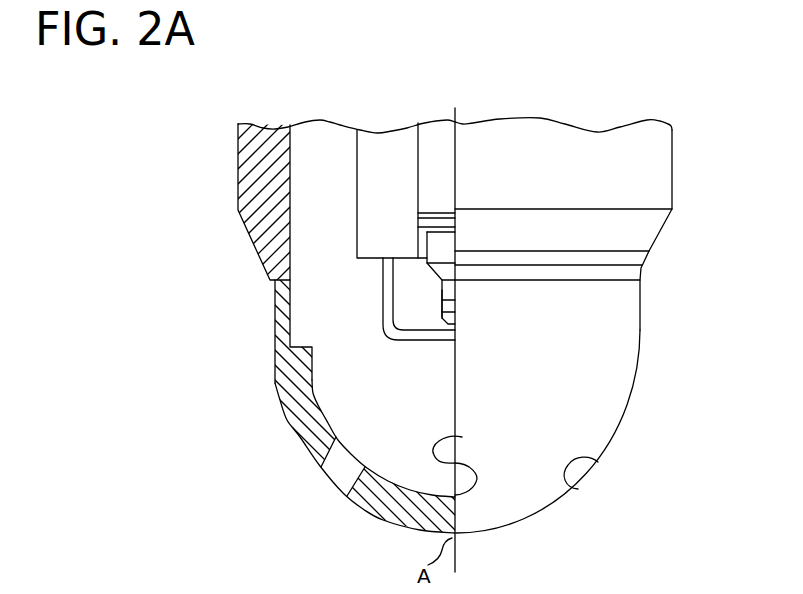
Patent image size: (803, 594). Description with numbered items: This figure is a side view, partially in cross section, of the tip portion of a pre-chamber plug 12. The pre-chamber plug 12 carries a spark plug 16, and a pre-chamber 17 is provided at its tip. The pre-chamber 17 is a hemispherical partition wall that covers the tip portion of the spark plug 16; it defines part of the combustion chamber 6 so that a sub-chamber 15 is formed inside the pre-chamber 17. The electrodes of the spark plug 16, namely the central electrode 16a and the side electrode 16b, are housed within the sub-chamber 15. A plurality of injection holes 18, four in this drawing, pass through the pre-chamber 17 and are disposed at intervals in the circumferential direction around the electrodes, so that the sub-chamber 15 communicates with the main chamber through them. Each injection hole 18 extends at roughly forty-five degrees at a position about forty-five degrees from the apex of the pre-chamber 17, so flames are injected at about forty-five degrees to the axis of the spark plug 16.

The combustion chamber 6 is at (267, 200).
The pre-chamber plug 12 is at (679, 99).
The sub-chamber 15 is at (330, 385).
The spark plug 16 is at (438, 108).
The central electrode 16a is at (458, 330).
The side electrode 16b is at (418, 342).
The pre-chamber 17 is at (373, 513).
The injection holes 18 is at (323, 462).